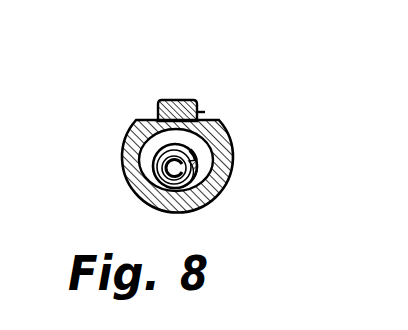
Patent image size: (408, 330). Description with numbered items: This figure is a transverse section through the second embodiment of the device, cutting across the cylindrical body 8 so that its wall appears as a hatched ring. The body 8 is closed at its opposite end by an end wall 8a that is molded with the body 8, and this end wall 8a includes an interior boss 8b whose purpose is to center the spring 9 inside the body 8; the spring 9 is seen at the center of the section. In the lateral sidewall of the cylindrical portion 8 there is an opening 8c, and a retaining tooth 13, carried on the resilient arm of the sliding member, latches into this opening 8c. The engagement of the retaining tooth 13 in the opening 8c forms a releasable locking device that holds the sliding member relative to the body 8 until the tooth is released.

The cylindrical body 8 is at (125, 155).
The end wall 8a is at (210, 139).
The interior boss 8b is at (172, 173).
The opening 8c is at (201, 114).
The spring 9 is at (150, 178).
The retaining tooth 13 is at (170, 101).